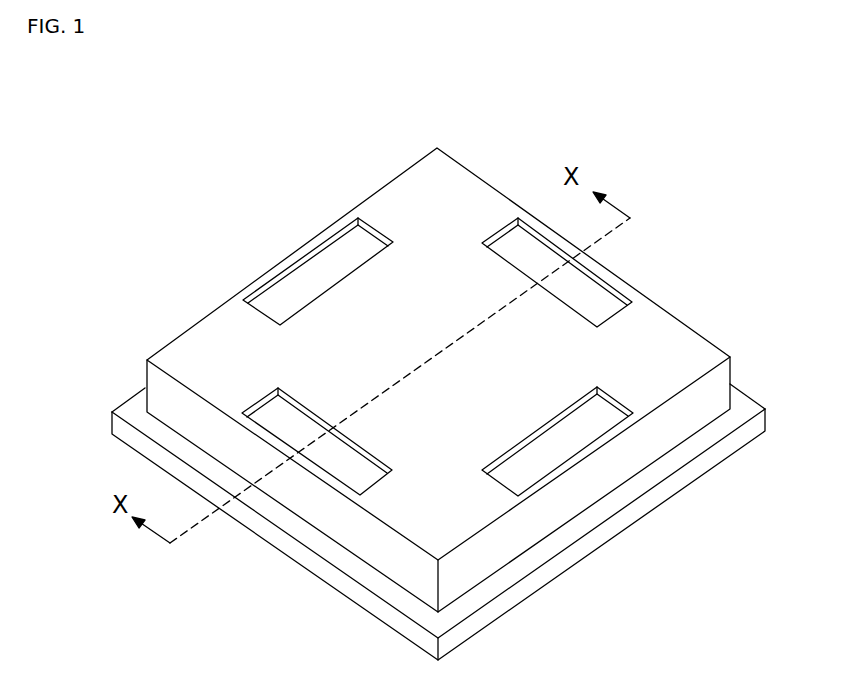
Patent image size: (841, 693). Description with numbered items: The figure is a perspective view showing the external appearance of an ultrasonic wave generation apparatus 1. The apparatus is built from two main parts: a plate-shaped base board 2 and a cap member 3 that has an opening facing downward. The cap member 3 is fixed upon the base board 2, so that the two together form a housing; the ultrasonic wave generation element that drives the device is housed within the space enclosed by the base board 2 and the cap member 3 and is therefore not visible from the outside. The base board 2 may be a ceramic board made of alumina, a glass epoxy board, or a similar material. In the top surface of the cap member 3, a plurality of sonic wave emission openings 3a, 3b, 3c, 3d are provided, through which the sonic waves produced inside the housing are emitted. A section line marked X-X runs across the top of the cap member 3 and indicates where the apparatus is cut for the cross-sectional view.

The ultrasonic wave generation apparatus 1 is at (276, 189).
The base board 2 is at (338, 591).
The cap member 3 is at (678, 320).
The sonic wave emission opening 3a is at (368, 229).
The sonic wave emission opening 3b is at (512, 236).
The sonic wave emission opening 3c is at (554, 460).
The sonic wave emission opening 3d is at (343, 478).